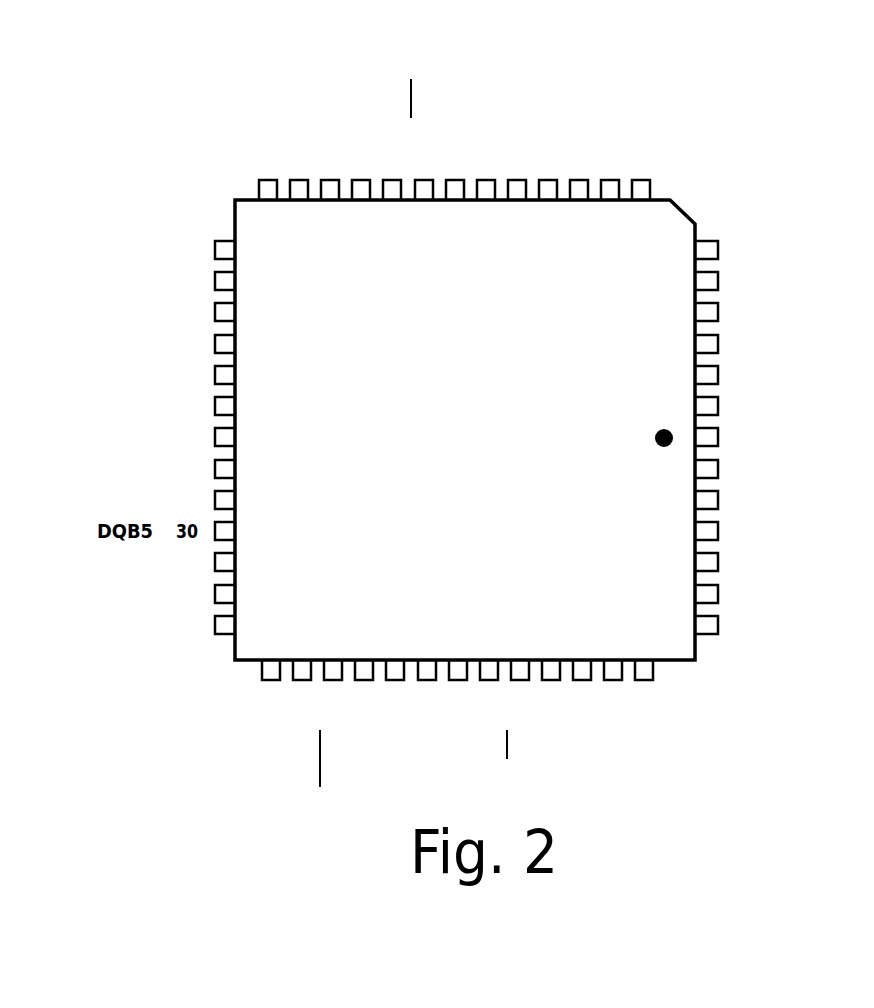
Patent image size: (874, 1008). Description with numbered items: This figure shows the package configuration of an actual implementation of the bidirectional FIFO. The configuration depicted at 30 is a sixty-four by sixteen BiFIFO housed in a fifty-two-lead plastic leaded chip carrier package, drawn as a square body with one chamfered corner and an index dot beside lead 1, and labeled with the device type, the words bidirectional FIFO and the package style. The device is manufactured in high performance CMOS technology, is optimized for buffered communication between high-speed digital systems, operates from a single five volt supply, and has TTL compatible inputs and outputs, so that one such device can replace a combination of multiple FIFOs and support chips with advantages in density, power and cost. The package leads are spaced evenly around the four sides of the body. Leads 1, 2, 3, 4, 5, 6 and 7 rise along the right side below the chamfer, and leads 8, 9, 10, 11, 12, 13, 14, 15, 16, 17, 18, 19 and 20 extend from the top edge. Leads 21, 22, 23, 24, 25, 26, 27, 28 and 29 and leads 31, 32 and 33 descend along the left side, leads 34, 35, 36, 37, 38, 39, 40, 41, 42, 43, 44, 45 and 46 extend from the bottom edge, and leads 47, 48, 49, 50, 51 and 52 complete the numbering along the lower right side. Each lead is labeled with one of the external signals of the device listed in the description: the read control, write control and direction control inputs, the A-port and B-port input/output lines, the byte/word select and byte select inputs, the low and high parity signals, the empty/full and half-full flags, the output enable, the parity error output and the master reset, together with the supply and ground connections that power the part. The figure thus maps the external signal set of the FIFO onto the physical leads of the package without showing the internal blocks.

The BiFIFO package configuration 30 is at (478, 568).
The pin 1 VSS 1 is at (763, 437).
The pin 2 DQA7 2 is at (771, 406).
The pin 3 DQA8 3 is at (771, 375).
The pin 4 DQA9 4 is at (771, 344).
The pin 5 DQA10 5 is at (777, 312).
The pin 6 DQA11 6 is at (777, 281).
The pin 7 DQA12 7 is at (777, 250).
The pin 8 DQA13 8 is at (641, 125).
The pin 9 DQA14 9 is at (610, 125).
The FIFO memory array 10 is at (579, 125).
The pin 11 PRTYL 11 is at (548, 126).
The bidirectional input/output port A 12 is at (517, 125).
The pin 13 VDD 13 is at (486, 138).
The bidirectional input/output port B 14 is at (455, 139).
The pin 15 PEF 15 is at (423, 139).
The input multiplexer 16 is at (392, 145).
The pin 17 EFF 17 is at (361, 140).
The output multiplexer 18 is at (330, 125).
The pin 19 DQB14 19 is at (299, 125).
The byte/word converter 20 is at (268, 125).
The pin 21 DQB12 21 is at (160, 250).
The word/byte converter 22 is at (160, 281).
The pin 23 DQB10 23 is at (160, 312).
The parity generator/checker 24 is at (166, 344).
The pin 25 DQB8 25 is at (166, 375).
The flag generator 26 is at (166, 406).
The pin 27 VSS 27 is at (174, 437).
The control logic 28 is at (173, 469).
The pin 29 DQB6 29 is at (166, 500).
The pin 31 DQB4 31 is at (166, 562).
The pin 32 DQB3 32 is at (166, 594).
The pin 33 DQB2 33 is at (166, 625).
The pin 34 DQB1 34 is at (271, 723).
The pin 35 DQB0 35 is at (302, 723).
The pin 36 MRST 36 is at (332, 723).
The pin 37 BT/WD 37 is at (364, 728).
The pin 38 RD 38 is at (395, 709).
The pin 39 WR 39 is at (427, 711).
The pin 40 VSS 40 is at (458, 715).
The pin 41 VDD 41 is at (489, 716).
The pin 42 OE 42 is at (519, 709).
The pin 43 AO 43 is at (551, 710).
The pin 44 DIR 44 is at (582, 712).
The pin 45 DQA0 45 is at (613, 723).
The pin 46 DQA1 46 is at (644, 723).
The pin 47 DQA2 47 is at (771, 625).
The pin 48 DQA3 48 is at (771, 594).
The pin 49 DQA4 49 is at (771, 562).
The pin 50 DQA5 50 is at (771, 531).
The pin 51 DQA6 51 is at (771, 500).
The pin 52 VDD 52 is at (764, 469).